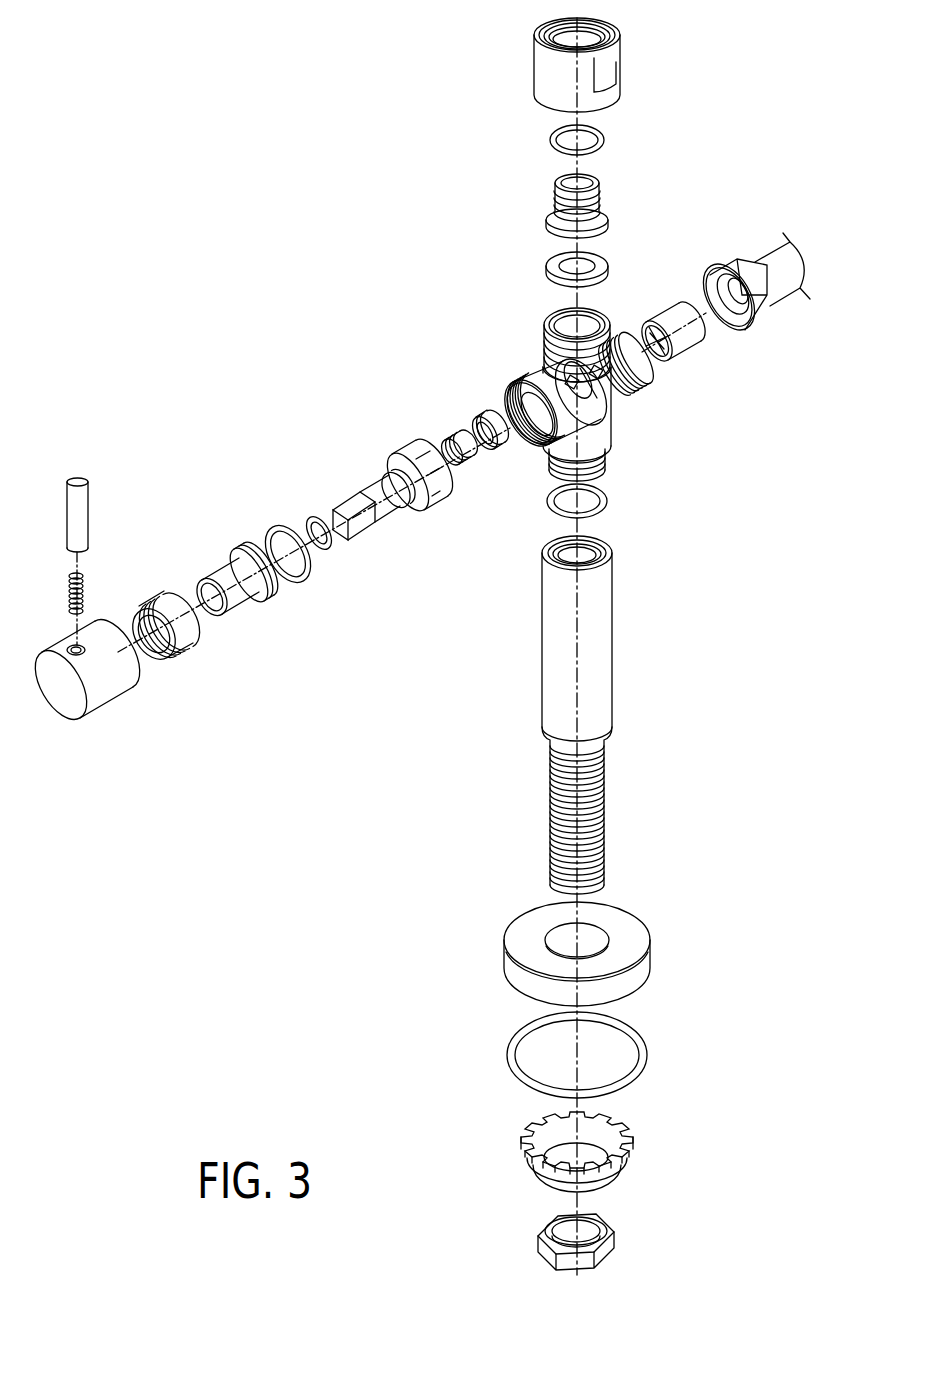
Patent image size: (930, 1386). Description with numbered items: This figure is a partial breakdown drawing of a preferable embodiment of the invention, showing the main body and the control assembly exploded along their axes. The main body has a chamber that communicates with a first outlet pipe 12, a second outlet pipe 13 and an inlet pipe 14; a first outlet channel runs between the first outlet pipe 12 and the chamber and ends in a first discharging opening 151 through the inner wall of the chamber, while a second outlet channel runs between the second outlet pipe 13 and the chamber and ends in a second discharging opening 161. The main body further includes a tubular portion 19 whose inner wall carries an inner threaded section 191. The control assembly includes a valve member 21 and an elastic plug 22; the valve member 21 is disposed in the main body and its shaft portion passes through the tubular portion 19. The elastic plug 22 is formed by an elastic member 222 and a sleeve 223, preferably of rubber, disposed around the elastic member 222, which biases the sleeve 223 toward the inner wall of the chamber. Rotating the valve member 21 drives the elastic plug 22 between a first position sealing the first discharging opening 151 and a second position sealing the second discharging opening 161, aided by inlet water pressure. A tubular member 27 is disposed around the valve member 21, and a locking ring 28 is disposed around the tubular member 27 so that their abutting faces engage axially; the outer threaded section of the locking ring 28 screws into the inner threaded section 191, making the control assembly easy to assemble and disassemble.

The first outlet pipe 12 is at (614, 316).
The second outlet pipe 13 is at (642, 384).
The inlet pipe 14 is at (605, 455).
The first discharging opening 151 is at (541, 367).
The second discharging opening 161 is at (603, 382).
The tubular portion 19 is at (513, 381).
The inner threaded section 191 is at (523, 445).
The valve member 21 is at (373, 493).
The elastic plug 22 is at (483, 306).
The elastic member 222 is at (447, 437).
The sleeve 223 is at (478, 424).
The tubular member 27 is at (266, 600).
The locking ring 28 is at (192, 657).